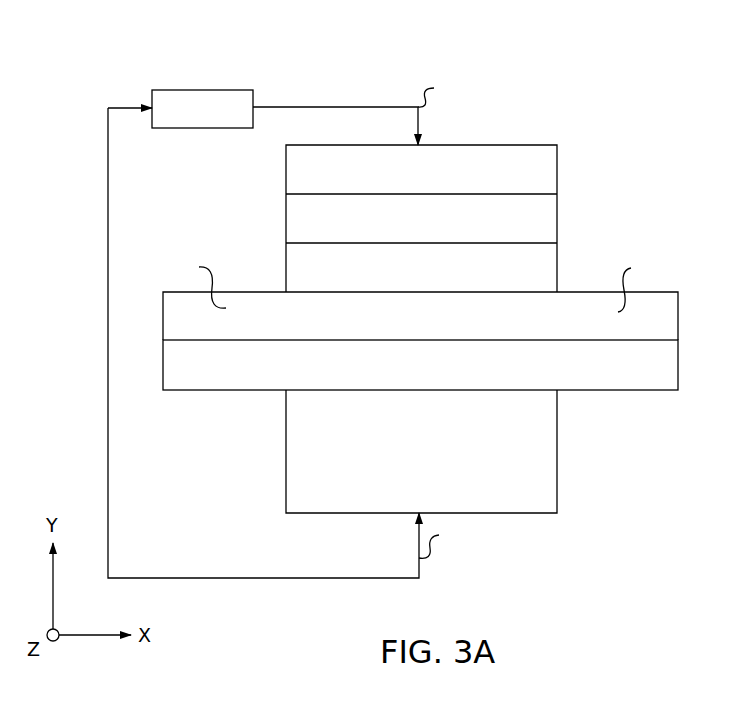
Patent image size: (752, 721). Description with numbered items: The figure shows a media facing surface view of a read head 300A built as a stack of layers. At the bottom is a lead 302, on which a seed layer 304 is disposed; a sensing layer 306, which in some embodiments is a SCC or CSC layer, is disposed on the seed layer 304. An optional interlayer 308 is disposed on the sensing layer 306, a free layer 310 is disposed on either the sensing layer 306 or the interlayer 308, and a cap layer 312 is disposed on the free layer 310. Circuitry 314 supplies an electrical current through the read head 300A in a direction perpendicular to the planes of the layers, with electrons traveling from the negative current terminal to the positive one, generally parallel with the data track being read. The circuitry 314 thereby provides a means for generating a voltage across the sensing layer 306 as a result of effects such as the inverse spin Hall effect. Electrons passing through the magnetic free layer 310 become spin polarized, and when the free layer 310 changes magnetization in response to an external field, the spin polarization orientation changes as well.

The read head 300A is at (176, 48).
The lead 302 is at (442, 466).
The seed layer 304 is at (442, 379).
The sensing layer 306 is at (442, 331).
The interlayer 308 is at (442, 281).
The free layer 310 is at (442, 231).
The cap layer 312 is at (442, 181).
The circuitry 314 is at (224, 122).